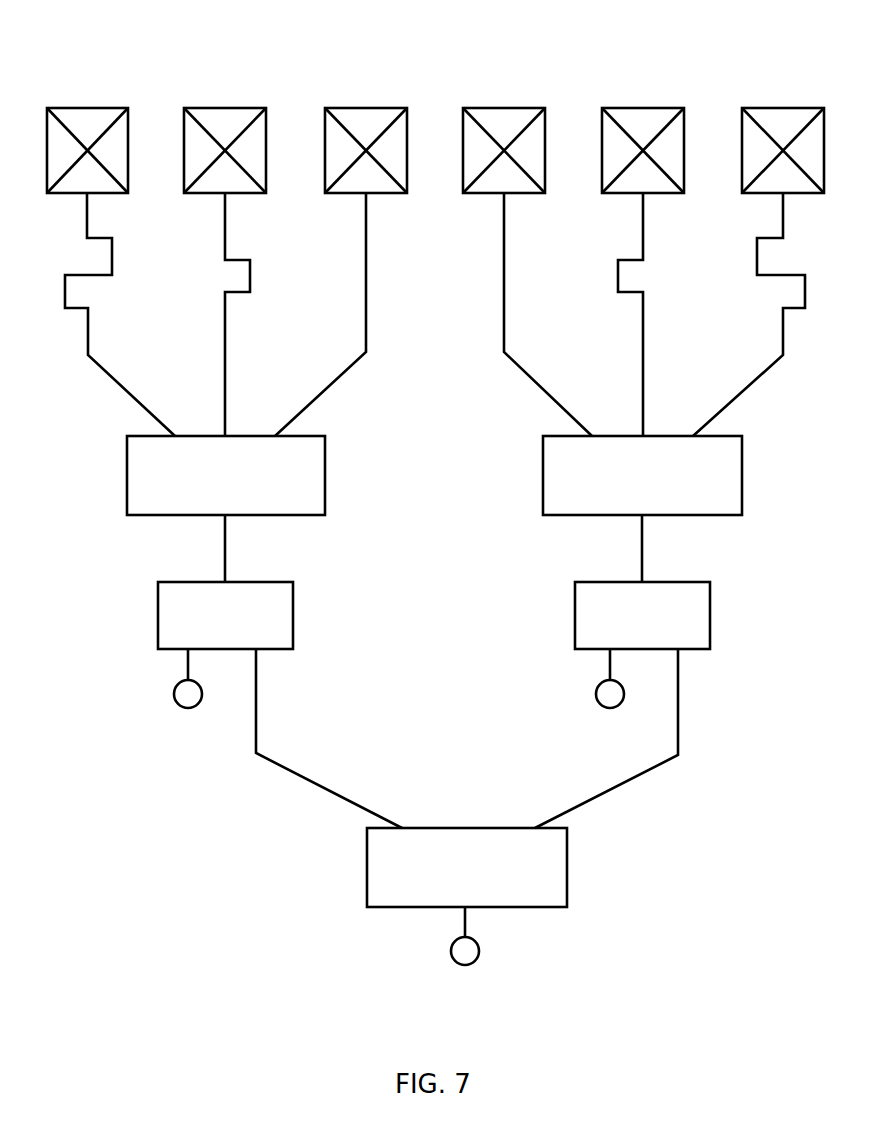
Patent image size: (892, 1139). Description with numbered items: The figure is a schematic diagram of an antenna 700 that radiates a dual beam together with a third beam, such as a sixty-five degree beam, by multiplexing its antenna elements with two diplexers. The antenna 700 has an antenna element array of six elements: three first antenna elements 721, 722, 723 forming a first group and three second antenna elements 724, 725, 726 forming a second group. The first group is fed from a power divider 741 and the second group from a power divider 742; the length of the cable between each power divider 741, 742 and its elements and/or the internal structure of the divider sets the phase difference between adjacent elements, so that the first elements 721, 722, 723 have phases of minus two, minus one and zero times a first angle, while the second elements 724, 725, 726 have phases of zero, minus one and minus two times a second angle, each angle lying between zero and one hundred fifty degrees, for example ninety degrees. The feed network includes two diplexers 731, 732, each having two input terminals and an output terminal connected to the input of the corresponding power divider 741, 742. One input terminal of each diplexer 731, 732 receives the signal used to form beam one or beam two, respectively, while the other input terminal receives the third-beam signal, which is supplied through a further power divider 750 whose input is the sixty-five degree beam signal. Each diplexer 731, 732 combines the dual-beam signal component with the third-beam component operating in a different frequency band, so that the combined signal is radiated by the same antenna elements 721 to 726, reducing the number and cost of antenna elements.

The antenna 700 is at (595, 75).
The first antenna element 721 is at (71, 137).
The first antenna element 722 is at (209, 137).
The first antenna element 723 is at (350, 137).
The second antenna element 724 is at (488, 137).
The second antenna element 725 is at (627, 137).
The second antenna element 726 is at (767, 137).
The diplexer 731 is at (211, 627).
The diplexer 732 is at (633, 627).
The power divider 741 is at (288, 493).
The power divider 742 is at (688, 500).
The power divider 750 is at (532, 893).